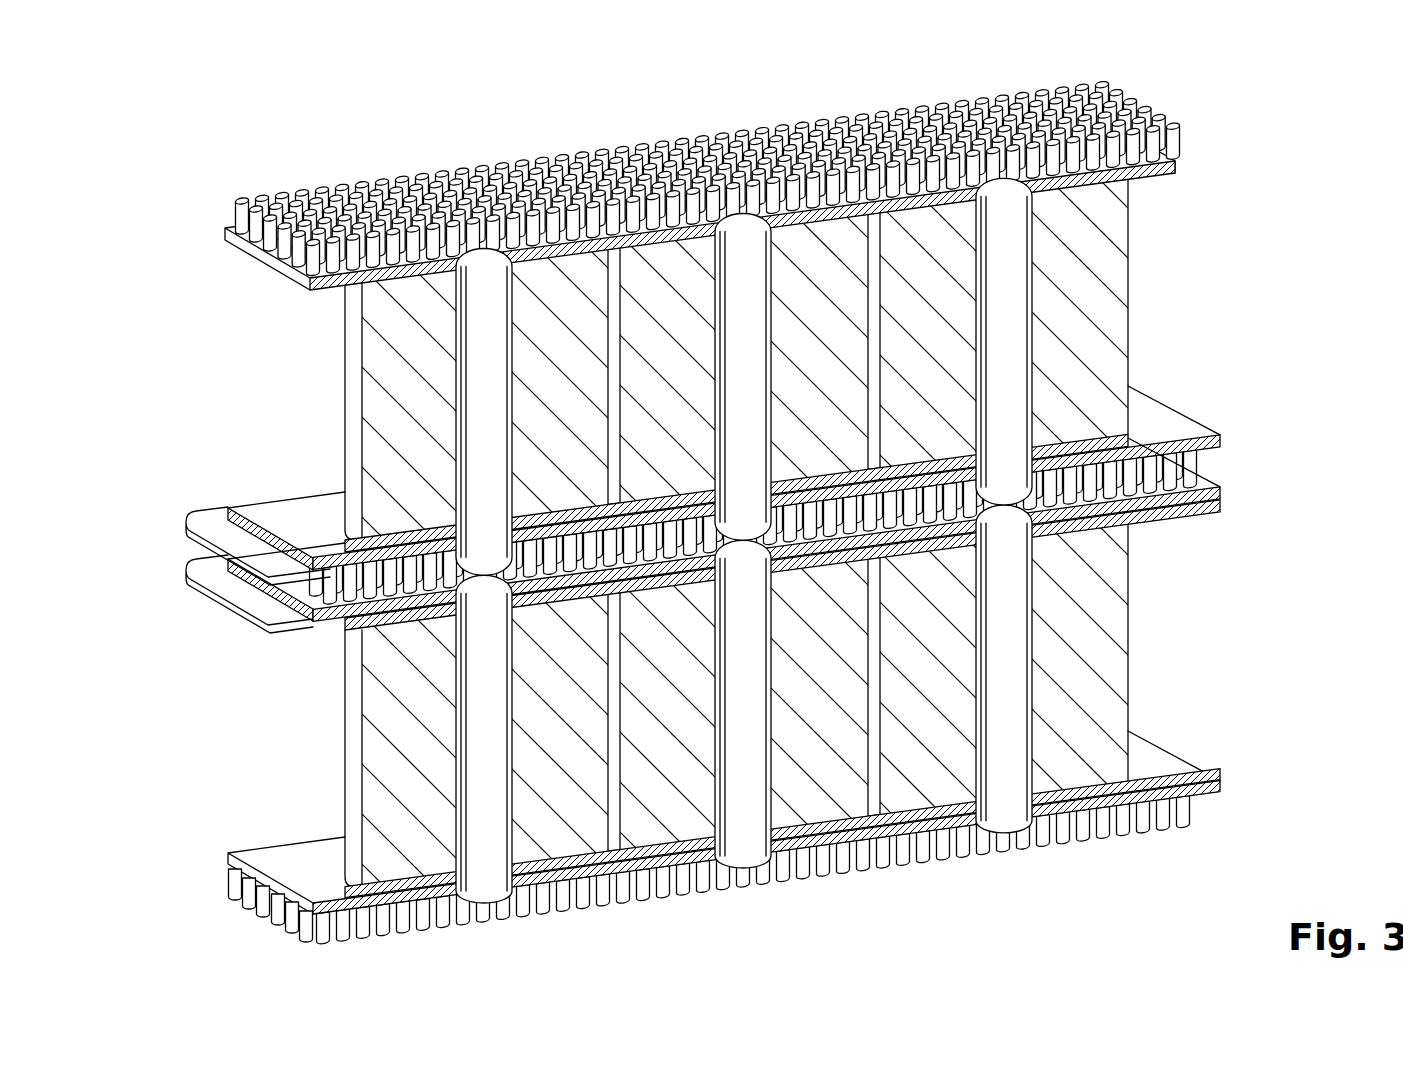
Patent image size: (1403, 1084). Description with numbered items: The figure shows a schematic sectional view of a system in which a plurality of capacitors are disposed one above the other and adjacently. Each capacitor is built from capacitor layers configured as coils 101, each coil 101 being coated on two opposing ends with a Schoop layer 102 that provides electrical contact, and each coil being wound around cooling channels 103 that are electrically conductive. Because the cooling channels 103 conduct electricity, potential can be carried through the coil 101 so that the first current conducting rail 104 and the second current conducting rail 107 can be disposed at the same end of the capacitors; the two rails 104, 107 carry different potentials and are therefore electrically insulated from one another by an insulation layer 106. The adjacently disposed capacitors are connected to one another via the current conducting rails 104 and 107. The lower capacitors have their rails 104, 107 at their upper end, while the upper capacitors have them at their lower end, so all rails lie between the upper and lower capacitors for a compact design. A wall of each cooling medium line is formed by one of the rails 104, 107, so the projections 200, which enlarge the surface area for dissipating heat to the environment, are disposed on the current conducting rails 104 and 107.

The projections 200 is at (378, 141).
The coil 101 is at (545, 280).
The Schoop layer 102 is at (385, 287).
The cooling channel 103 is at (482, 268).
The first current conducting rail 104 is at (1156, 170).
The insulation layer 106 is at (205, 515).
The second current conducting rail 107 is at (1170, 460).